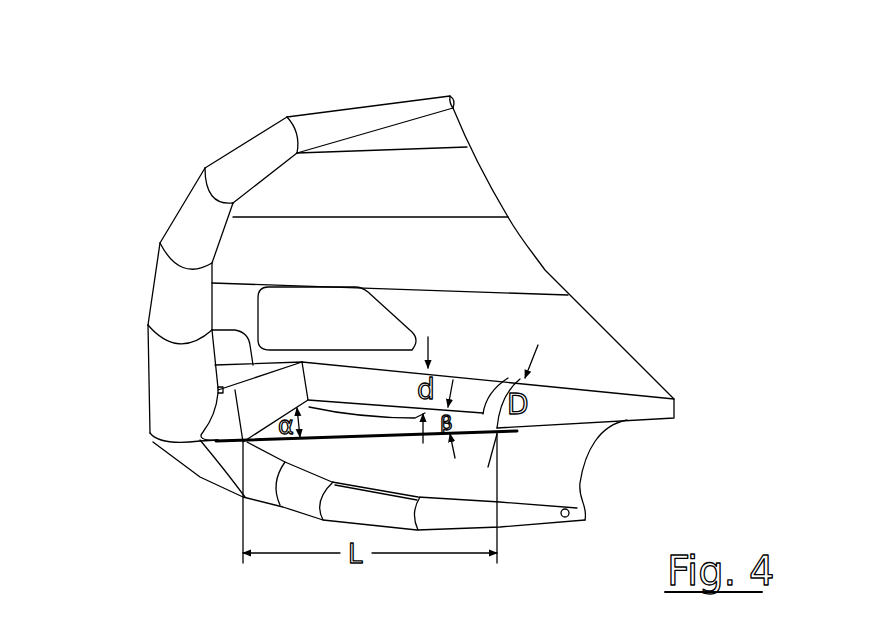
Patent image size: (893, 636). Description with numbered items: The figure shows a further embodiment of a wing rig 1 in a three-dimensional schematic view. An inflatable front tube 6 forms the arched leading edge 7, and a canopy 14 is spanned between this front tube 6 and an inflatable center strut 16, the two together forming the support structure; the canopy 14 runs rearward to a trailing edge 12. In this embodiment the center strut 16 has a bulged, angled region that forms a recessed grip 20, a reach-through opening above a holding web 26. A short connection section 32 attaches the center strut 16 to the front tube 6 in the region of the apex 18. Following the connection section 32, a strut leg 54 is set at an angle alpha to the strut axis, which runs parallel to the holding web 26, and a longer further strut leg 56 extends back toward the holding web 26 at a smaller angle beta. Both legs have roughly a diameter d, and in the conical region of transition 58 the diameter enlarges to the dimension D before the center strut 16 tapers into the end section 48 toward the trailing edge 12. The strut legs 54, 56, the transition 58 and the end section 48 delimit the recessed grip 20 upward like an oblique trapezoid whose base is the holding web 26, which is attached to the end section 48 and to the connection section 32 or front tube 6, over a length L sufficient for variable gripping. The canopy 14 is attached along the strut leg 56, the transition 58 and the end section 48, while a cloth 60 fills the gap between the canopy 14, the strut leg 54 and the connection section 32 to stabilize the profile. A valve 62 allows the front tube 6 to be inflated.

The wing rig 1 is at (527, 215).
The inflatable front tube 6 is at (185, 222).
The leading edge 7 is at (157, 273).
The trailing edge 12 is at (465, 128).
The canopy 14 is at (411, 181).
The inflatable center strut 16 is at (478, 373).
The apex 18 is at (150, 435).
The recessed grip 20 is at (355, 436).
The holding web 26 is at (429, 434).
The connection section 32 is at (225, 412).
The tapering end section 48 is at (578, 417).
The strut leg 54 is at (273, 416).
The further strut leg 56 is at (396, 398).
The conical region of transition 58 is at (498, 405).
The cloth 60 is at (240, 373).
The valve 62 is at (218, 390).